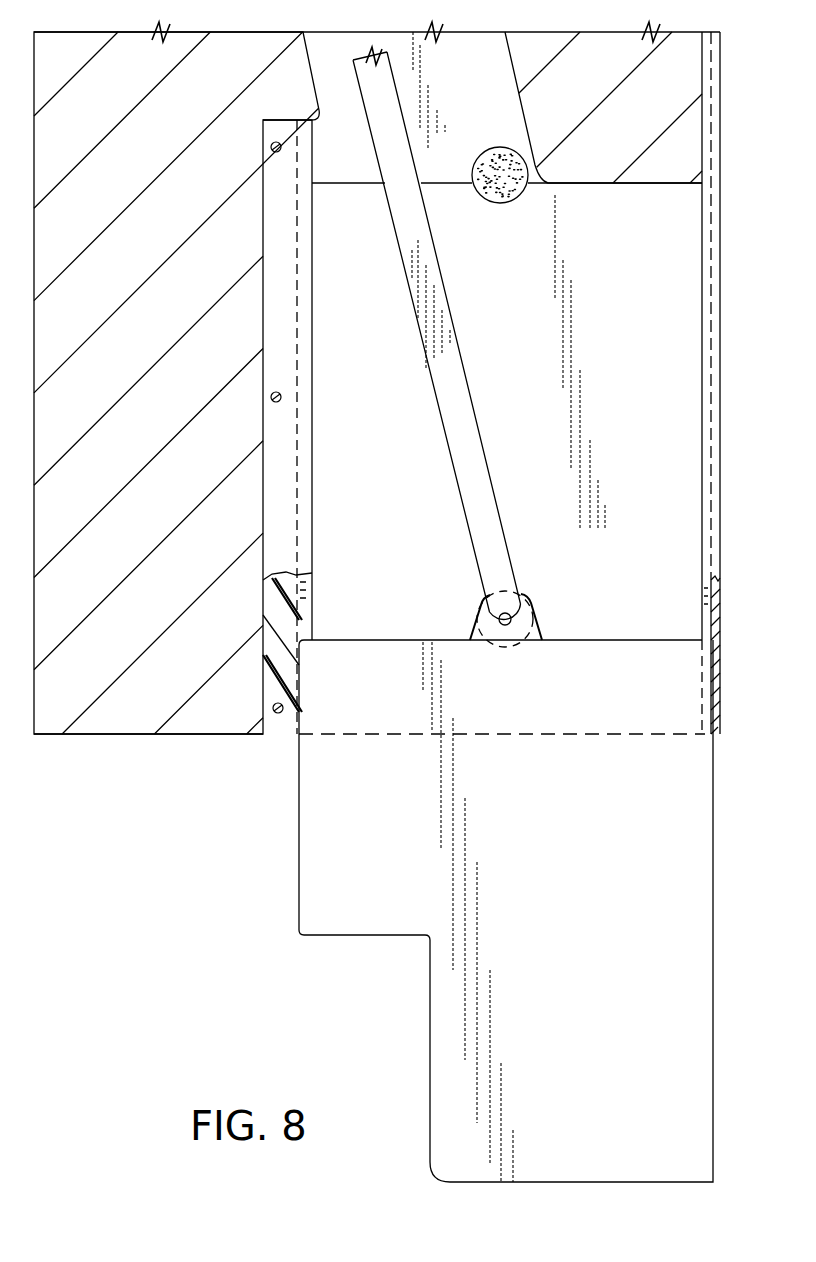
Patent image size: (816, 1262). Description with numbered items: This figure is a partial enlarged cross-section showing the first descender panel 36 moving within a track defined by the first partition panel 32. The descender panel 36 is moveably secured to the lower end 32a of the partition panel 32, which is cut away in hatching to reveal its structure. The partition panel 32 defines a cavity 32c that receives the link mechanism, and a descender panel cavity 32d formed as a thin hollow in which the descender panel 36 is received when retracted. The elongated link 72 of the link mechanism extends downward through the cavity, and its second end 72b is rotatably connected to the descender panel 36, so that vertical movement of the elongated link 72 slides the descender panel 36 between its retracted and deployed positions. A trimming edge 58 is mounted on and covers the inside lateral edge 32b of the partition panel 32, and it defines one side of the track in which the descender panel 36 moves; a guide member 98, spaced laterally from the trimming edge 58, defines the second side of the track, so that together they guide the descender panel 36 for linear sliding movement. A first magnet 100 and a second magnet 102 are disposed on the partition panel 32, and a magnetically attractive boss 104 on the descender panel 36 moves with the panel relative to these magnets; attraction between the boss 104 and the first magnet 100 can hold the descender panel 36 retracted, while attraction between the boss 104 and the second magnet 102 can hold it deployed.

The first partition panel 32 is at (126, 732).
The lower end of the first partition panel 32a is at (222, 727).
The inside lateral edge of the first partition panel 32b is at (693, 160).
The cavity 32c is at (493, 63).
The descender panel cavity 32d is at (646, 357).
The first descender panel 36 is at (332, 850).
The first trimming edge 58 is at (717, 600).
The elongated link 72 is at (440, 392).
The second end of the elongated link 72b is at (508, 598).
The guide member 98 is at (288, 623).
The first magnet 100 is at (510, 196).
The second magnet 102 is at (481, 610).
The magnetically attractive boss 104 is at (528, 625).